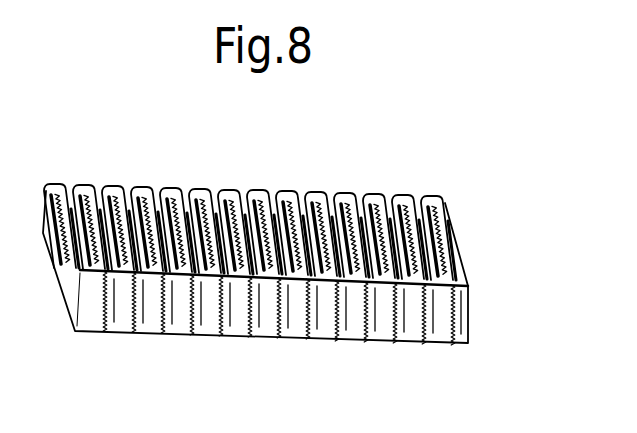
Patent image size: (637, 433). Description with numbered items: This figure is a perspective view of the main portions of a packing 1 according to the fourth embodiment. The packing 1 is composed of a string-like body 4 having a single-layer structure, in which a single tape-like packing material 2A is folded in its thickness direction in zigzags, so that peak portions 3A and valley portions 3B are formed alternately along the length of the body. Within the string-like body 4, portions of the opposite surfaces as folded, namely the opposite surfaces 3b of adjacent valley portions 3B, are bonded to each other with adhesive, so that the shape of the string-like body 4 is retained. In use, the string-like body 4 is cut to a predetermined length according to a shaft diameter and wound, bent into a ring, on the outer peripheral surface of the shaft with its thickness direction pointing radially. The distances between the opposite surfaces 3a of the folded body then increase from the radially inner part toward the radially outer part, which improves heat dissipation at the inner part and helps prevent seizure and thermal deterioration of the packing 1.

The packing 1 is at (117, 184).
The tape-like packing material 2A is at (166, 190).
The peak portions 3A is at (201, 192).
The opposite surfaces 3a is at (249, 208).
The opposite surfaces 3b is at (218, 297).
The valley portions 3B is at (292, 323).
The string-like body 4 is at (369, 198).